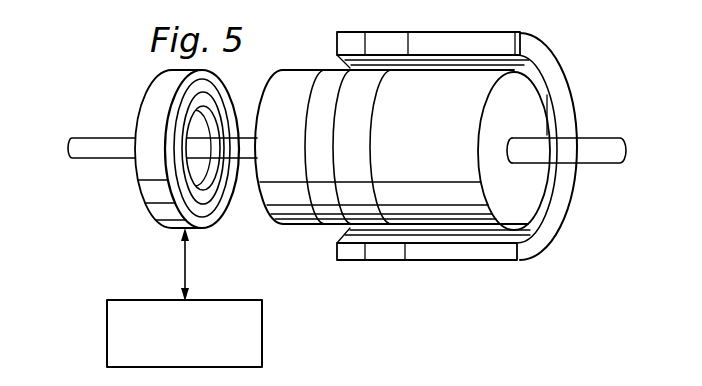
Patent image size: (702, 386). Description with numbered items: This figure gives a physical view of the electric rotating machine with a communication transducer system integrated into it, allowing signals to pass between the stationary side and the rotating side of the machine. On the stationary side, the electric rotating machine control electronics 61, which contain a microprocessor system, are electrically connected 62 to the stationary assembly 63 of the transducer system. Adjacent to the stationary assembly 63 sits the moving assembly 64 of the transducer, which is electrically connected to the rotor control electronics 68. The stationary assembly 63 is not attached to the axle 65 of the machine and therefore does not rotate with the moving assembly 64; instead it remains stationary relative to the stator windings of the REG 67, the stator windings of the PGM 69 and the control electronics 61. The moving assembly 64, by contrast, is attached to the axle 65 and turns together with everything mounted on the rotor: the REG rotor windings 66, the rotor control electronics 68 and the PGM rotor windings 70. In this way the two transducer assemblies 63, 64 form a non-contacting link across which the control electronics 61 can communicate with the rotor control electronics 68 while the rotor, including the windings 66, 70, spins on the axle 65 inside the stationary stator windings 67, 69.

The electric rotating machine control electronics 61 is at (107, 318).
The electrical connection 62 is at (183, 264).
The stationary assembly 63 is at (162, 80).
The moving assembly 64 is at (420, 151).
The axle 65 is at (586, 141).
The REG rotor windings 66 is at (326, 193).
The stator windings of the REG 67 is at (352, 32).
The rotor control electronics 68 is at (356, 163).
The stator windings of the PGM 69 is at (506, 31).
The PGM rotor windings 70 is at (524, 204).